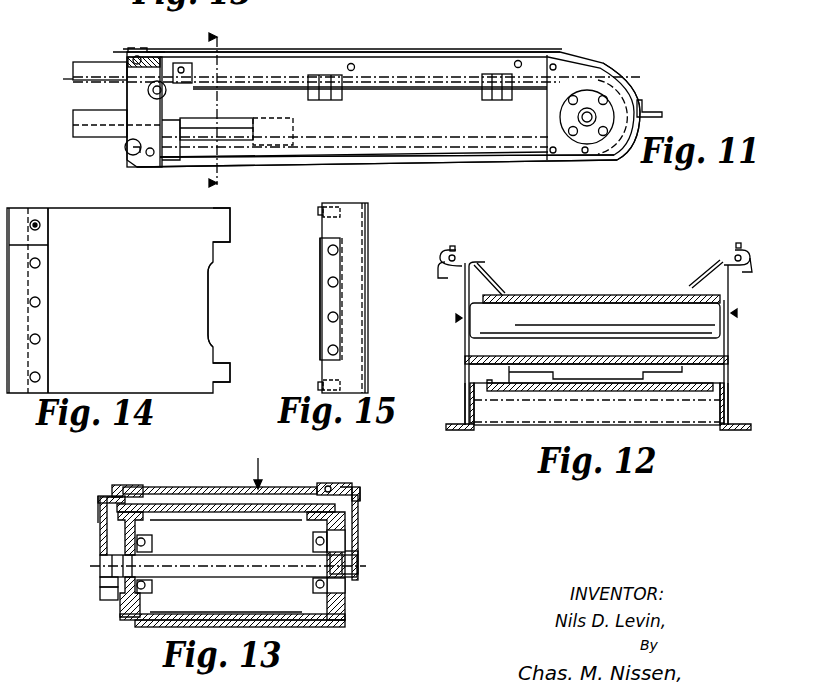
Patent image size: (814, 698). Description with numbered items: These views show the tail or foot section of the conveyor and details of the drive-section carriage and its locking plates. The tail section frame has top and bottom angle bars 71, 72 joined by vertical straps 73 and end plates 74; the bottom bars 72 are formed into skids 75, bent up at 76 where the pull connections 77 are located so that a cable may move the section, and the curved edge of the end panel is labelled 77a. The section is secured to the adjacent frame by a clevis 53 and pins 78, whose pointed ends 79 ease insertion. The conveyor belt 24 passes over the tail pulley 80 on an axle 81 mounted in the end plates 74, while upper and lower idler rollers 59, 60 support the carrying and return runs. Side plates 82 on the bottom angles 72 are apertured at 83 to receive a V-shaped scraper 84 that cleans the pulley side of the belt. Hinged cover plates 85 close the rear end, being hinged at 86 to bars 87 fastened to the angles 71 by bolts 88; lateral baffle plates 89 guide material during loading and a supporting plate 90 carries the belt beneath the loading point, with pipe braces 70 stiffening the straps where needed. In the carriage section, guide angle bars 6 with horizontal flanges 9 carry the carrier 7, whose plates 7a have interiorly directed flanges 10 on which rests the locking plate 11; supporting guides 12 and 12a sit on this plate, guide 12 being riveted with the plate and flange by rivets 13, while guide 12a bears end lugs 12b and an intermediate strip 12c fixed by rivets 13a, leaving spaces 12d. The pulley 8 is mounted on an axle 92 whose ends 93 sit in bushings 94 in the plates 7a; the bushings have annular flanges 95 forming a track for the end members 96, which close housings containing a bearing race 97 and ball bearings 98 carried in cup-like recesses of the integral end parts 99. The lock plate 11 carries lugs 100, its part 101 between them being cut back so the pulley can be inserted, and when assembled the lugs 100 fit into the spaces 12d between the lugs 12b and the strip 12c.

In FIG. 13, the guide angle bars 6 is at (98, 505).
In FIG. 13, the carrier 7 is at (257, 463).
In FIG. 14, the plates of the carrier 7a is at (7, 210).
In FIG. 15, the plates of the carrier 7a is at (367, 293).
In FIG. 13, the plates of the carrier 7a is at (100, 532).
In FIG. 13, the pulley 8 is at (300, 626).
In FIG. 13, the flanges of guide angle bars 9 is at (110, 493).
In FIG. 14, the interiorly directed flanges 10 is at (20, 222).
In FIG. 13, the interiorly directed flanges 10 is at (100, 497).
In FIG. 14, the locking plate 11 is at (68, 223).
In FIG. 13, the locking plate 11 is at (258, 487).
In FIG. 11, the supporting guide 12 is at (225, 111).
In FIG. 14, the supporting guide 12 is at (48, 250).
In FIG. 13, the supporting guide 12 is at (115, 485).
In FIG. 15, the supporting guide 12a is at (350, 222).
In FIG. 13, the supporting guide 12a is at (335, 483).
In FIG. 15, the lugs 12b is at (320, 210).
In FIG. 15, the strip 12c is at (320, 286).
In FIG. 15, the space 12d is at (322, 232).
In FIG. 14, the rivets 13 is at (40, 302).
In FIG. 15, the rivets 13a is at (336, 352).
In FIG. 13, the conveyor belt 24 is at (150, 626).
In FIG. 11, the clevis 53 is at (135, 58).
In FIG. 12, the clevis 53 is at (445, 265).
In FIG. 11, the upper idler rollers 59 is at (168, 90).
In FIG. 12, the upper idler rollers 59 is at (538, 317).
In FIG. 11, the lower idler rollers 60 is at (125, 147).
In FIG. 12, the pipe braces 70 is at (537, 415).
In FIG. 11, the top angle bars 71 is at (262, 60).
In FIG. 12, the top angle bars 71 is at (468, 263).
In FIG. 11, the bottom angle bars 72 is at (353, 158).
In FIG. 12, the bottom angle bars 72 is at (462, 431).
In FIG. 11, the vertical straps 73 is at (125, 98).
In FIG. 12, the vertical straps 73 is at (462, 330).
In FIG. 11, the end plates 74 is at (573, 70).
In FIG. 11, the skids 75 is at (512, 163).
In FIG. 11, the bent-up skid end 76 is at (623, 150).
In FIG. 11, the pull connections 77 is at (660, 113).
In FIG. 11, the curved edge 77a is at (607, 64).
In FIG. 11, the pins 78 is at (160, 48).
In FIG. 12, the pins 78 is at (452, 255).
In FIG. 11, the pointed ends of pins 79 is at (130, 64).
In FIG. 11, the tail pulley 80 is at (618, 87).
In FIG. 11, the axle 81 is at (587, 117).
In FIG. 11, the side plates 82 is at (277, 155).
In FIG. 12, the side plates 82 is at (463, 410).
In FIG. 11, the apertures 83 is at (240, 122).
In FIG. 12, the apertures 83 is at (463, 372).
In FIG. 11, the V-shaped scraper 84 is at (207, 132).
In FIG. 12, the V-shaped scraper 84 is at (668, 375).
In FIG. 11, the hinged cover plates 85 is at (430, 127).
In FIG. 11, the hinges 86 is at (342, 92).
In FIG. 11, the bars 87 is at (408, 67).
In FIG. 11, the bolts 88 is at (351, 63).
In FIG. 11, the lateral baffle plates 89 is at (467, 50).
In FIG. 12, the lateral baffle plates 89 is at (492, 283).
In FIG. 12, the supporting plate 90 is at (598, 295).
In FIG. 13, the axle 92 is at (330, 627).
In FIG. 13, the axle ends 93 is at (100, 566).
In FIG. 13, the bushings 94 is at (107, 585).
In FIG. 13, the annular flanges 95 is at (107, 594).
In FIG. 13, the end members 96 is at (125, 603).
In FIG. 13, the bearing race 97 is at (138, 538).
In FIG. 13, the ball bearings 98 is at (152, 540).
In FIG. 13, the end parts of pulley 99 is at (152, 586).
In FIG. 14, the lugs 100 is at (230, 238).
In FIG. 14, the cut-back plate part 101 is at (210, 293).